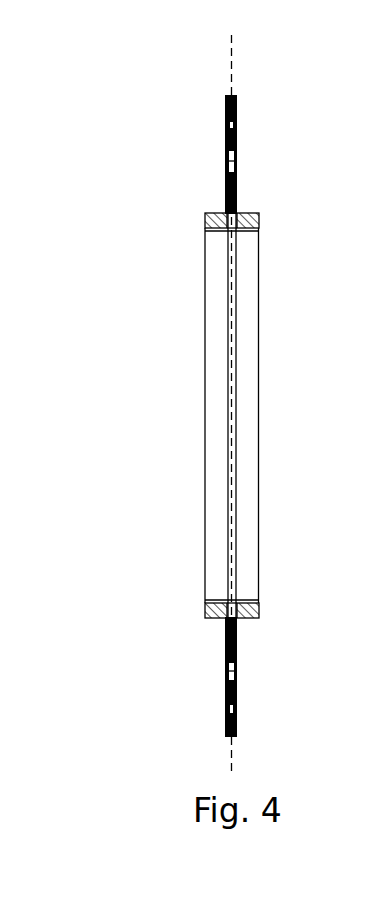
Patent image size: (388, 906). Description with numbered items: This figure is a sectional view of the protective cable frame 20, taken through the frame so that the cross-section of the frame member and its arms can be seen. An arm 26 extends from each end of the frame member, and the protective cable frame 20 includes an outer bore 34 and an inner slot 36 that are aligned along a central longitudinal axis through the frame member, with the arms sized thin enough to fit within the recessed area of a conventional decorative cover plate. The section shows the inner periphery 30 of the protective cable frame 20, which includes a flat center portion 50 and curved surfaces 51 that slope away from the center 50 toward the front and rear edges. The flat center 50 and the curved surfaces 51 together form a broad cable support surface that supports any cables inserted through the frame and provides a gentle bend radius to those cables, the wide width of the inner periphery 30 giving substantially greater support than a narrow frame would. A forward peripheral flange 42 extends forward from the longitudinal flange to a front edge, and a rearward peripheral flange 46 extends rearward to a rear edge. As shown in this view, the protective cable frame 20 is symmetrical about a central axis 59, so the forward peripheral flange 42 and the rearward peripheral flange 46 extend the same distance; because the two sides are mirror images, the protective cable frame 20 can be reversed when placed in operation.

The protective cable frame 20 is at (121, 166).
The central axis 59 is at (235, 64).
The arm 26 is at (290, 416).
The outer bore 34 is at (238, 118).
The inner slot 36 is at (238, 161).
The rearward peripheral flange 46 is at (259, 223).
The forward peripheral flange 42 is at (205, 218).
The inner periphery 30 is at (235, 415).
The flat center portion 50 is at (236, 321).
The curved surfaces 51 is at (215, 395).